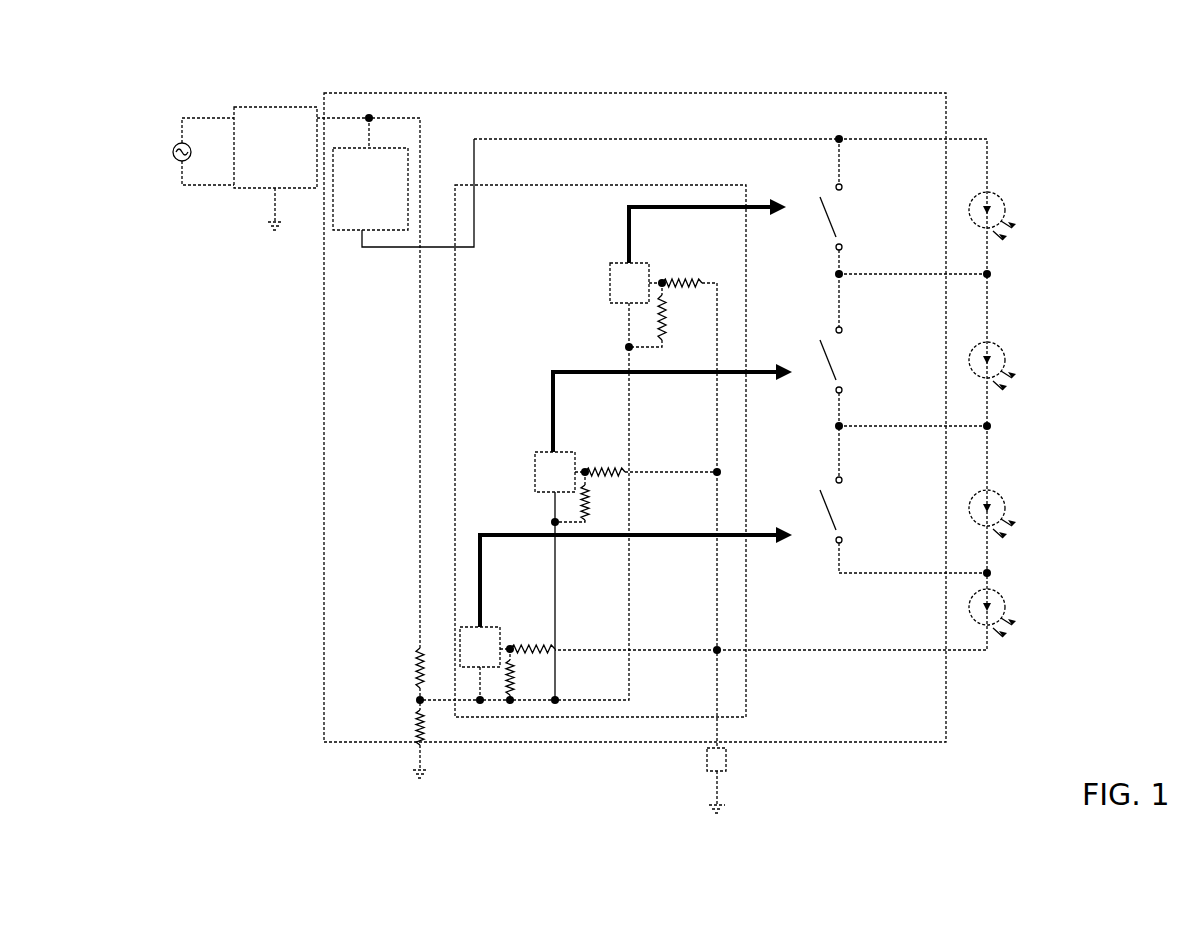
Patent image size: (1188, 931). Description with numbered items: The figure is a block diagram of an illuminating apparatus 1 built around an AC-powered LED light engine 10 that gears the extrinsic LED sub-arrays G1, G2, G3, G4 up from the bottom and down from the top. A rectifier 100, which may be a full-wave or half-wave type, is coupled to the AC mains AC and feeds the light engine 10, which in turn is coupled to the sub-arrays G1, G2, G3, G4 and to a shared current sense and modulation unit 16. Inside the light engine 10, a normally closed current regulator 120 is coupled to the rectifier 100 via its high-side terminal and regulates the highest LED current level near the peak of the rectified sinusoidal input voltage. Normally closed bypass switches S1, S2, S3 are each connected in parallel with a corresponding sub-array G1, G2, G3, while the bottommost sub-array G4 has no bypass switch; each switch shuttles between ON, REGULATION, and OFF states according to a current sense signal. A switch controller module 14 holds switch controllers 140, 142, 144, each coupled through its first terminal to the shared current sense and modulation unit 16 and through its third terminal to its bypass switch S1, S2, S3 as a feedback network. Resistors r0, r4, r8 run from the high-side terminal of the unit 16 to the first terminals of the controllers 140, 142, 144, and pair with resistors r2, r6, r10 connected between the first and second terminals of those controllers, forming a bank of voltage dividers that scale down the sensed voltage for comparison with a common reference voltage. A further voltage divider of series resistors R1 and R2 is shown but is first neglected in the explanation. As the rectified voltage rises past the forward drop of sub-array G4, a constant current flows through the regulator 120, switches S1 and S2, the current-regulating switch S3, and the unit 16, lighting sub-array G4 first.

The illuminating apparatus 1 is at (152, 93).
The AC-powered LED light engine 10 is at (946, 105).
The rectifier 100 is at (327, 377).
The normally closed current regulator 120 is at (403, 182).
The switch controller module 14 is at (625, 183).
The switch controller 140 is at (543, 481).
The switch controller 142 is at (562, 578).
The switch controller 144 is at (487, 665).
The shared current sense and modulation unit 16 is at (726, 758).
The AC mains AC is at (203, 151).
The resistor R1 is at (401, 679).
The resistor R2 is at (402, 744).
The resistor r0 is at (691, 500).
The resistor r2 is at (660, 315).
The resistor r4 is at (651, 457).
The resistor r6 is at (584, 497).
The resistor r8 is at (532, 637).
The resistor r10 is at (527, 676).
The normally closed bypass switch S1 is at (905, 233).
The normally closed bypass switch S2 is at (905, 402).
The normally closed bypass switch S3 is at (905, 527).
The extrinsic LED sub-array G1 is at (1018, 216).
The extrinsic LED sub-array G2 is at (1018, 366).
The extrinsic LED sub-array G3 is at (1018, 514).
The extrinsic LED sub-array G4 is at (1020, 613).